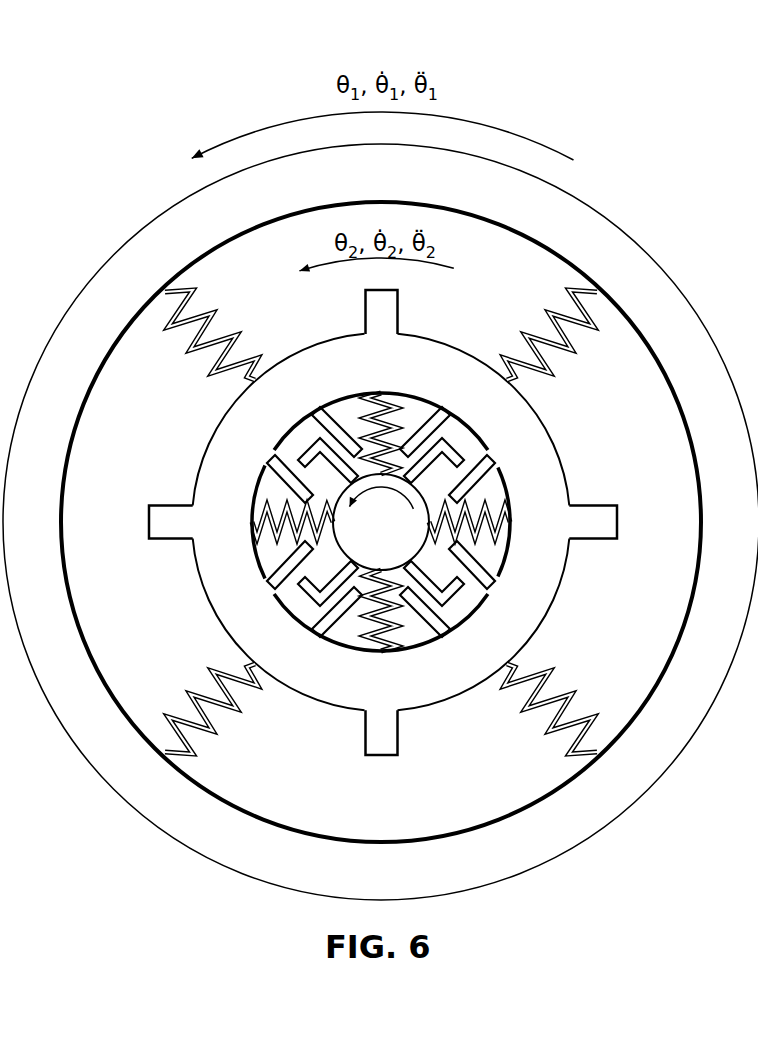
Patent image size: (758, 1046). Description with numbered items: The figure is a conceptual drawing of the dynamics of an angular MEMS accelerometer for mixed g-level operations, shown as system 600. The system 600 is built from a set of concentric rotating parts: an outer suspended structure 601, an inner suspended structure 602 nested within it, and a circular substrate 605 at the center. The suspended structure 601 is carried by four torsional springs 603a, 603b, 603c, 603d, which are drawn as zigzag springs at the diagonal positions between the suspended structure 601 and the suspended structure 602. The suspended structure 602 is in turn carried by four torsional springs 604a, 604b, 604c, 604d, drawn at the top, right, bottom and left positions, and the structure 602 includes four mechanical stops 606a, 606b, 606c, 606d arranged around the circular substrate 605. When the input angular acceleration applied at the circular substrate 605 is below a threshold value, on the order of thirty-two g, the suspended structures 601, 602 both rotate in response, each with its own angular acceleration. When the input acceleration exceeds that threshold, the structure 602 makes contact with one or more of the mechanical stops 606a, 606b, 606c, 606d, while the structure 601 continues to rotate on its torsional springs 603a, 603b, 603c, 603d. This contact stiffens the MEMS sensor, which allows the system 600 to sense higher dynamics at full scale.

The system 600 is at (606, 106).
The suspended structure 601 is at (597, 243).
The suspended structure 602 is at (383, 756).
The torsional spring 603a is at (200, 362).
The torsional spring 603b is at (562, 362).
The torsional spring 603c is at (562, 682).
The torsional spring 603d is at (200, 682).
The torsional spring 604a is at (353, 402).
The torsional spring 604b is at (500, 556).
The torsional spring 604c is at (353, 642).
The torsional spring 604d is at (263, 556).
The circular substrate 605 is at (430, 452).
The mechanical stop 606a is at (328, 422).
The mechanical stop 606b is at (530, 455).
The mechanical stop 606c is at (529, 589).
The mechanical stop 606d is at (232, 589).